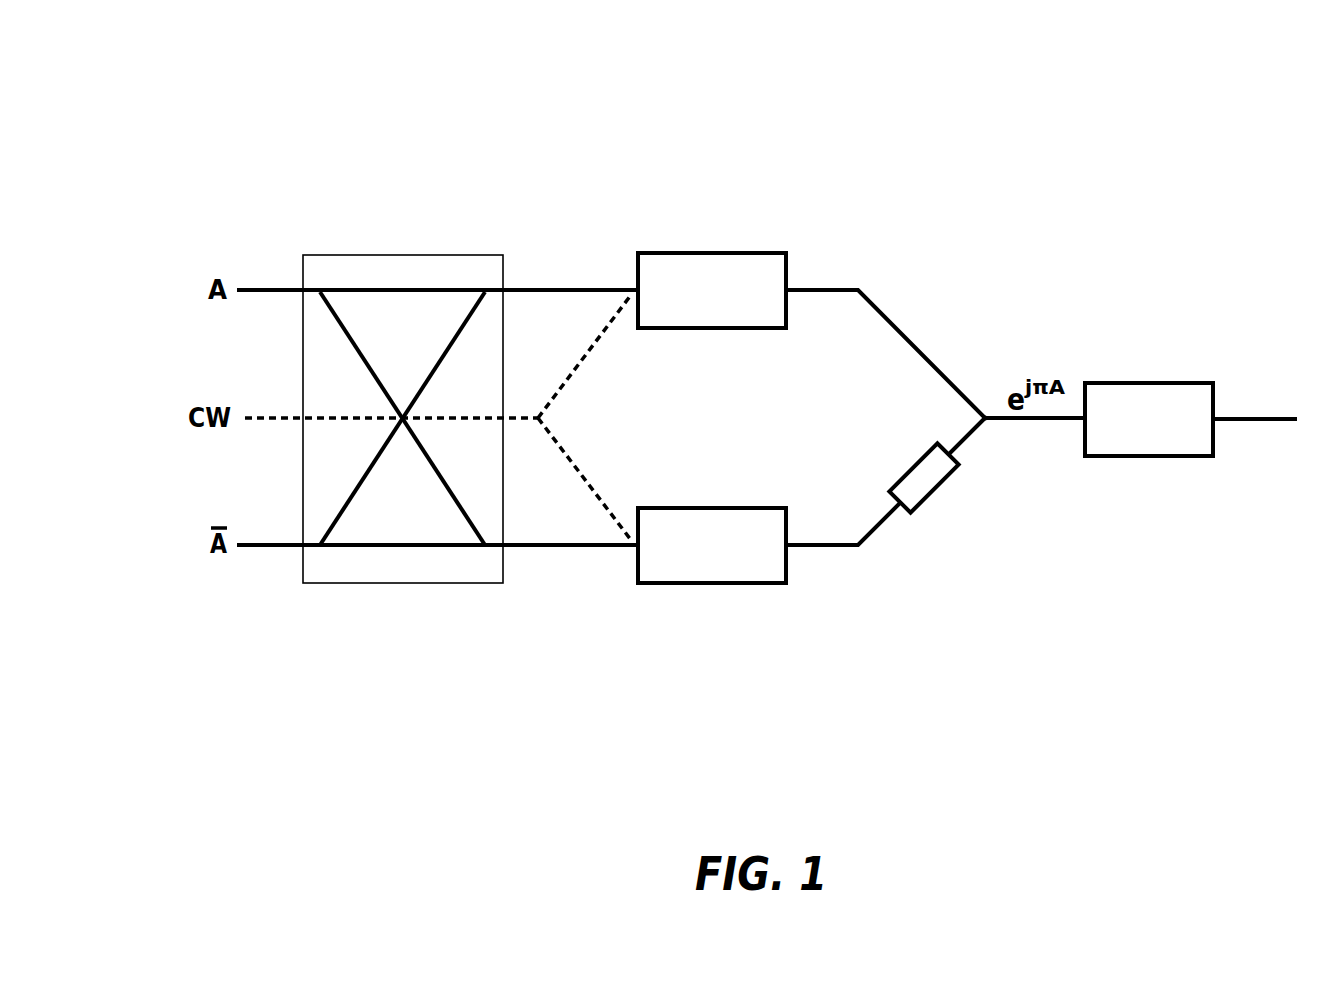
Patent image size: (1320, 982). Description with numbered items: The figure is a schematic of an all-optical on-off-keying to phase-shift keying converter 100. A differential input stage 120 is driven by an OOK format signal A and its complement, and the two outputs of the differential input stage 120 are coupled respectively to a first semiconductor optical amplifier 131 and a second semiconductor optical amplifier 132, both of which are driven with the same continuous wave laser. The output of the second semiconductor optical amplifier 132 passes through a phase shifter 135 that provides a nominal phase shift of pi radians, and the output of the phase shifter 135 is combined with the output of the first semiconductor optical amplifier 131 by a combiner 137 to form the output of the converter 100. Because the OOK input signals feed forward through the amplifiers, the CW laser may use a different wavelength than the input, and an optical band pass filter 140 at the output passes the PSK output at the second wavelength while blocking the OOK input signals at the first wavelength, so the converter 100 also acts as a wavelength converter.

The OOK-to-PSK converter 100 is at (738, 41).
The differential input stage 120 is at (400, 583).
The first semiconductor optical amplifier 131 is at (712, 253).
The second semiconductor optical amplifier 132 is at (712, 583).
The phase shifter 135 is at (932, 493).
The combiner 137 is at (988, 408).
The optical band pass filter 140 is at (1148, 383).